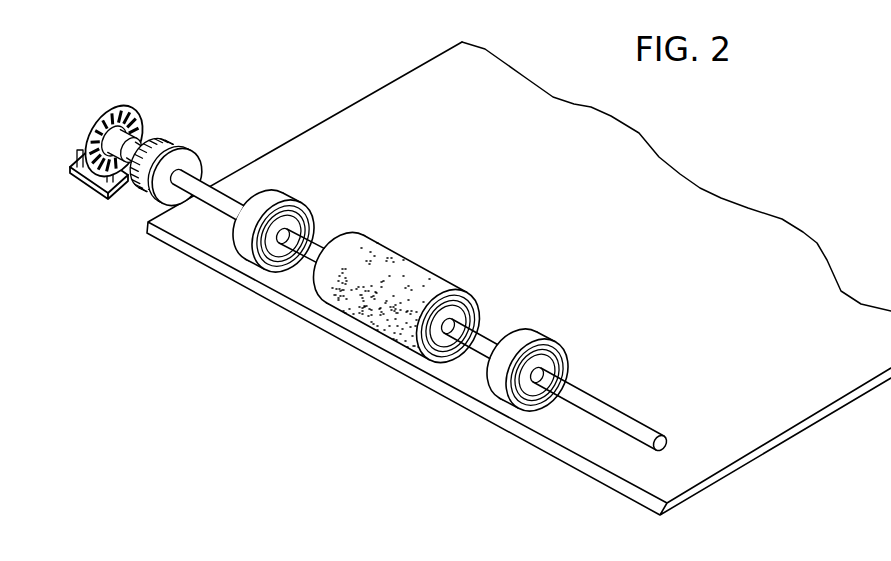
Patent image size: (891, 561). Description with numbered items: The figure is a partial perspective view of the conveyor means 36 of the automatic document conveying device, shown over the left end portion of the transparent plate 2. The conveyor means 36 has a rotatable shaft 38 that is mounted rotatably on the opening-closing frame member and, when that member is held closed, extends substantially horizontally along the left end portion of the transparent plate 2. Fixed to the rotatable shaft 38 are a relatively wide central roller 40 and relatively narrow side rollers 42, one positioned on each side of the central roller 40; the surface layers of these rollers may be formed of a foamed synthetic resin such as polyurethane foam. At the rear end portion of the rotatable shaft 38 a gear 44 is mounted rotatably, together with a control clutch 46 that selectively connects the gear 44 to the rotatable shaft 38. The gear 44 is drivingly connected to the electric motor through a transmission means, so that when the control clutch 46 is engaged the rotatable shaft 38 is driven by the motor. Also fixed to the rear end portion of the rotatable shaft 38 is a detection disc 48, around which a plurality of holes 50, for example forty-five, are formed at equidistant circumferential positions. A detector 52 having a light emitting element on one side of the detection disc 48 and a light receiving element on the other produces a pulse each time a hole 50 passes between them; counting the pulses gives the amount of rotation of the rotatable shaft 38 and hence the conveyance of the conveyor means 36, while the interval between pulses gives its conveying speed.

The transparent plate 2 is at (579, 257).
The conveyor means 36 is at (421, 304).
The rotatable shaft 38 is at (628, 418).
The central roller 40 is at (425, 268).
The side rollers 42 is at (287, 196).
The gear 44 is at (186, 153).
The control clutch 46 is at (157, 150).
The detection disc 48 is at (94, 123).
The holes 50 is at (128, 108).
The detector 52 is at (87, 180).